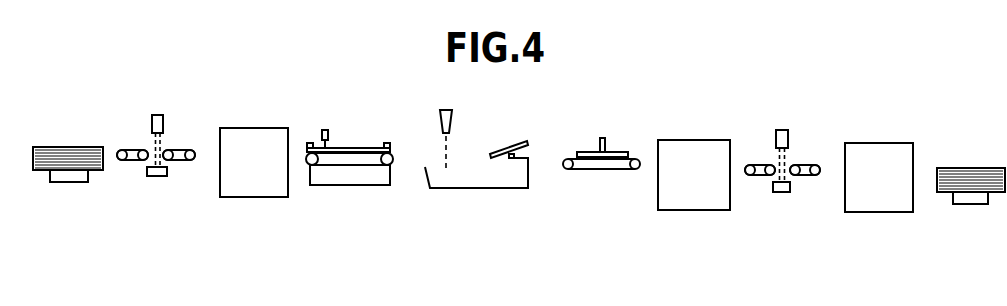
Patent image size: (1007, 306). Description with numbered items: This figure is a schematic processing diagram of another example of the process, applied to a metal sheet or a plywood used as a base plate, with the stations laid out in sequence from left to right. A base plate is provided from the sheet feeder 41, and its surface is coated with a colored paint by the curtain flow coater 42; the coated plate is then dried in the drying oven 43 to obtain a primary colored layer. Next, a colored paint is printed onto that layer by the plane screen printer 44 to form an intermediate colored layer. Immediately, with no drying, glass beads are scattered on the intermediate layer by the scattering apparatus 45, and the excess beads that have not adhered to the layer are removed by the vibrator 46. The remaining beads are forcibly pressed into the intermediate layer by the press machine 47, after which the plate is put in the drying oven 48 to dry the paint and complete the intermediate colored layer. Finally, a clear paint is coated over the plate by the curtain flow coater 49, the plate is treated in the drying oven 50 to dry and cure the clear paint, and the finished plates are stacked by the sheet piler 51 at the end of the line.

The sheet feeder 41 is at (70, 182).
The curtain flow coater 42 is at (158, 176).
The drying oven 43 is at (253, 190).
The plane screen printer 44 is at (348, 180).
The scattering apparatus for beads 45 is at (452, 118).
The vibrator 46 is at (492, 158).
The press machine 47 is at (598, 172).
The drying oven 48 is at (692, 200).
The curtain flow coater 49 is at (782, 192).
The drying oven 50 is at (880, 205).
The sheet piler 51 is at (968, 204).